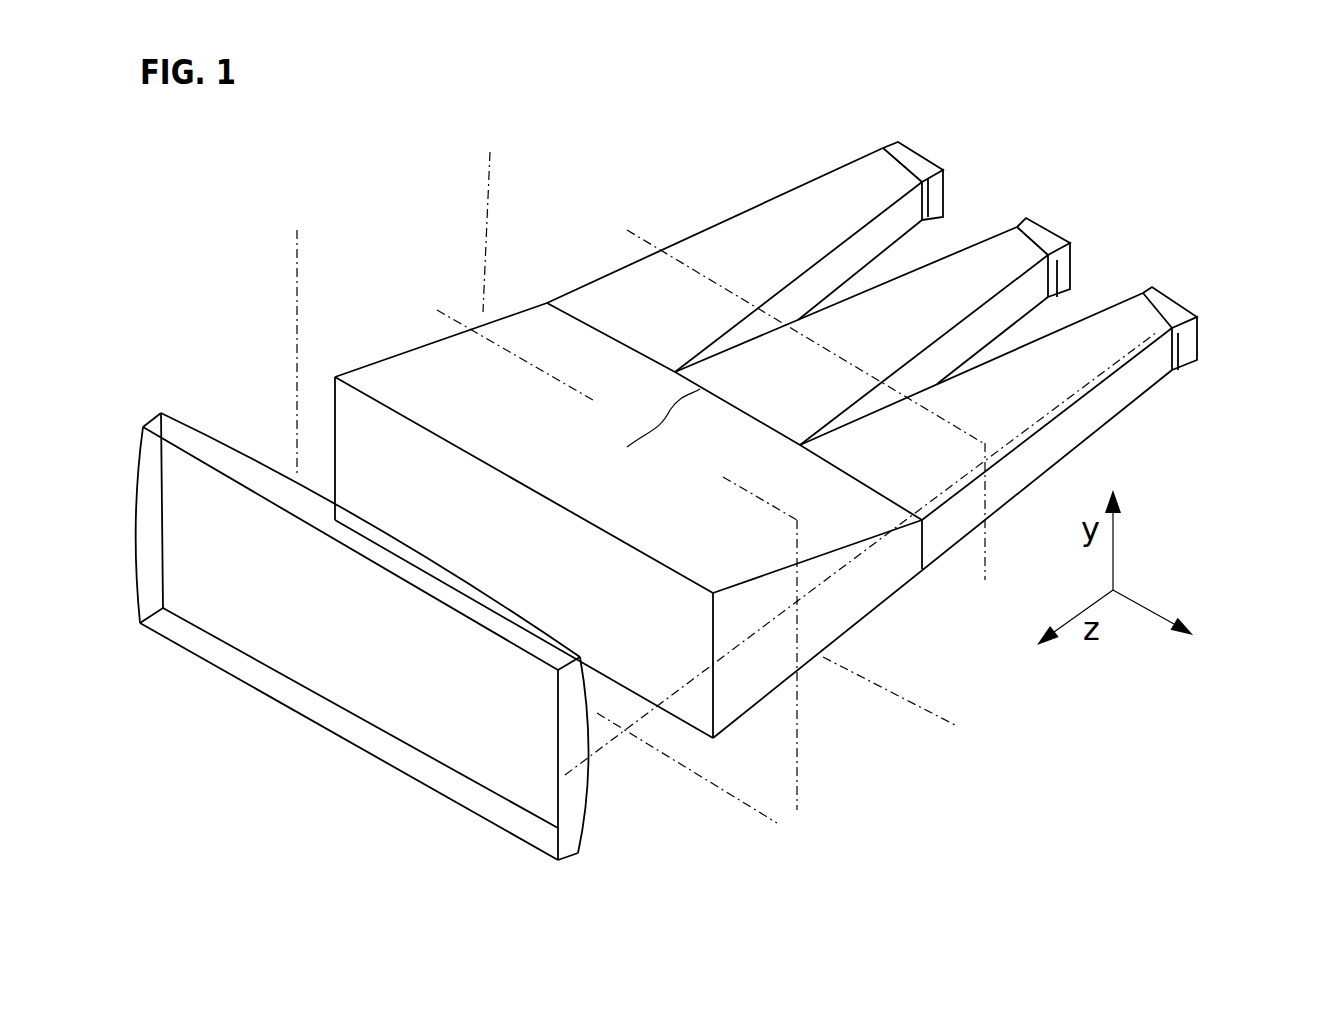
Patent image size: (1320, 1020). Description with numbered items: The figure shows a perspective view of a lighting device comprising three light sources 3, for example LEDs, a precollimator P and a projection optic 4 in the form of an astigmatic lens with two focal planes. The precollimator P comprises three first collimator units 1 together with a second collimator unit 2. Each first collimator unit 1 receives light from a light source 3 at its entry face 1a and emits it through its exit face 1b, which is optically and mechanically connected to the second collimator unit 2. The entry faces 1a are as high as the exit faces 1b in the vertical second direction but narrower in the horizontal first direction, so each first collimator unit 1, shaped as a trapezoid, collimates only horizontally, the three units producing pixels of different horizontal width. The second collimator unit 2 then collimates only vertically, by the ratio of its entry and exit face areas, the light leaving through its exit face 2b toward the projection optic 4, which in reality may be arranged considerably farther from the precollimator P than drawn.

The first collimator unit 1 is at (777, 198).
The entry face of first collimator unit 1a is at (873, 146).
The exit face of first collimator unit 1b is at (616, 340).
The second collimator unit 2 is at (731, 582).
The exit face of second collimator unit 2b is at (536, 521).
The light source 3 is at (921, 147).
The projection optic 4 is at (221, 447).
The precollimator P is at (650, 138).